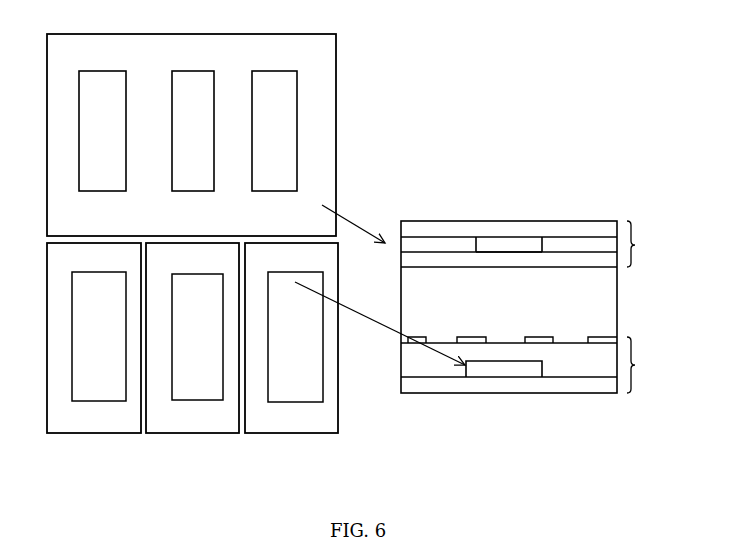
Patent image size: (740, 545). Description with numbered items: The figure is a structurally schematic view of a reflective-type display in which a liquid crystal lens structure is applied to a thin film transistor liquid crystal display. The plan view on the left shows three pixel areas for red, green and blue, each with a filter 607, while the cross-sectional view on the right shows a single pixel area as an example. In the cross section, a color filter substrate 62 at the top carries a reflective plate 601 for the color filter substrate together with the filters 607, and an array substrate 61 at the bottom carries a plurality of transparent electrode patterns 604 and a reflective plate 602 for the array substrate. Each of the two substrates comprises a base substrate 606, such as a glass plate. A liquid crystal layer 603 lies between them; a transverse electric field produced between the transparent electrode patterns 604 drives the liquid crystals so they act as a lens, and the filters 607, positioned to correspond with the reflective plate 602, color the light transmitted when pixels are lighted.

The reflective plate for a color filter substrate 601 is at (322, 92).
The reflective plate for an array substrate 602 is at (495, 368).
The liquid crystal layer 603 is at (437, 302).
The transparent electrode 604 is at (462, 339).
The base substrate 606 is at (594, 228).
The filters 607 is at (102, 91).
The array substrate 61 is at (641, 365).
The color filter substrate 62 is at (641, 244).